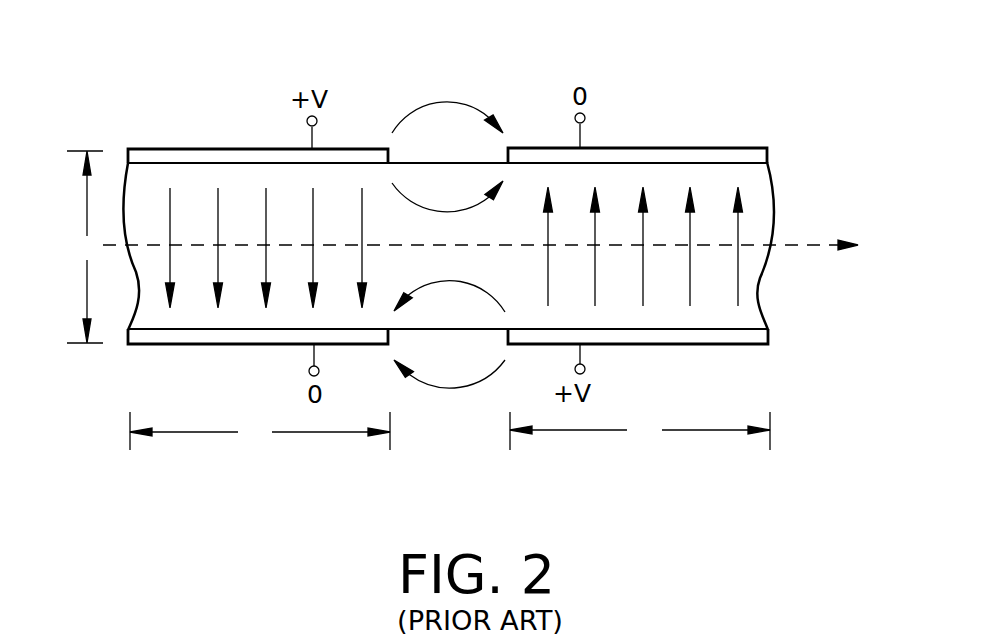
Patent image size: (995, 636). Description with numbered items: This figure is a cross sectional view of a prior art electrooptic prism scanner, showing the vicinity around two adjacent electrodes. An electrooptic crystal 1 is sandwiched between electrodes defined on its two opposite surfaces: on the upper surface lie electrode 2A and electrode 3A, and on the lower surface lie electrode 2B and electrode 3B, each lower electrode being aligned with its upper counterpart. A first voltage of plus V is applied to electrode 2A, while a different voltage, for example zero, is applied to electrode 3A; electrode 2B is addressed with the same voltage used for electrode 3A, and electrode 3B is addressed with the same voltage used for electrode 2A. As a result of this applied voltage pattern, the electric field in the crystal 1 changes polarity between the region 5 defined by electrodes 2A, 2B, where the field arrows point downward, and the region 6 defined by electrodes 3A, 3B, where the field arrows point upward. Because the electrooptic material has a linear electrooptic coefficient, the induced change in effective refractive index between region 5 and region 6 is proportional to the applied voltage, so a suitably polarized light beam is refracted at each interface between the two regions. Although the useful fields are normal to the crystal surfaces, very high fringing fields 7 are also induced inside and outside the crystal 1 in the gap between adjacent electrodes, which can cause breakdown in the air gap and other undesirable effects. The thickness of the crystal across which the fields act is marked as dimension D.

The electrooptic crystal 1 is at (756, 188).
The electrode 2a 2A is at (185, 150).
The electrode 2b 2B is at (185, 345).
The electrode 3a 3A is at (710, 148).
The electrode 3b 3B is at (730, 344).
The region defined by electrodes 2a, 2b 5 is at (260, 431).
The region defined by electrodes 3a, 3b 6 is at (640, 431).
The fringing fields 7 is at (449, 103).
The tube diameter D is at (85, 247).